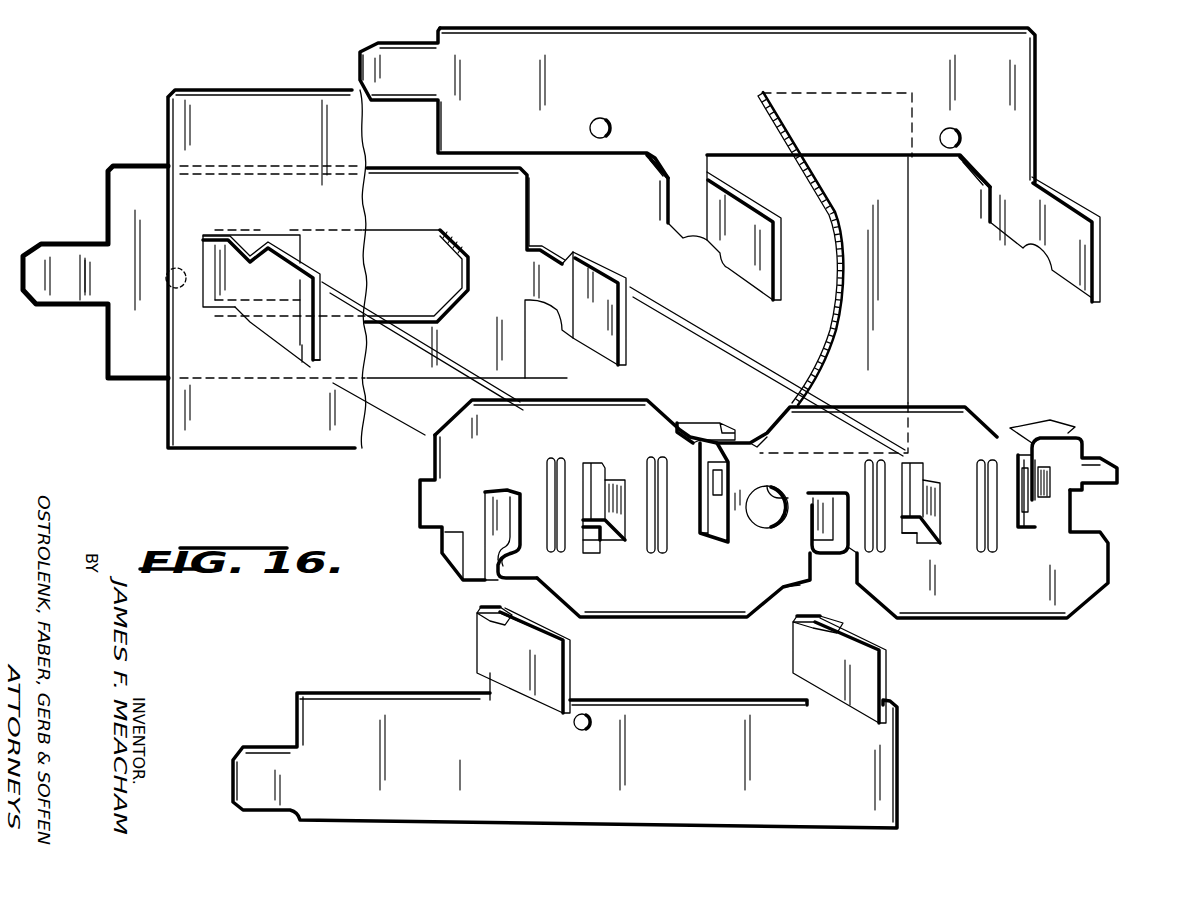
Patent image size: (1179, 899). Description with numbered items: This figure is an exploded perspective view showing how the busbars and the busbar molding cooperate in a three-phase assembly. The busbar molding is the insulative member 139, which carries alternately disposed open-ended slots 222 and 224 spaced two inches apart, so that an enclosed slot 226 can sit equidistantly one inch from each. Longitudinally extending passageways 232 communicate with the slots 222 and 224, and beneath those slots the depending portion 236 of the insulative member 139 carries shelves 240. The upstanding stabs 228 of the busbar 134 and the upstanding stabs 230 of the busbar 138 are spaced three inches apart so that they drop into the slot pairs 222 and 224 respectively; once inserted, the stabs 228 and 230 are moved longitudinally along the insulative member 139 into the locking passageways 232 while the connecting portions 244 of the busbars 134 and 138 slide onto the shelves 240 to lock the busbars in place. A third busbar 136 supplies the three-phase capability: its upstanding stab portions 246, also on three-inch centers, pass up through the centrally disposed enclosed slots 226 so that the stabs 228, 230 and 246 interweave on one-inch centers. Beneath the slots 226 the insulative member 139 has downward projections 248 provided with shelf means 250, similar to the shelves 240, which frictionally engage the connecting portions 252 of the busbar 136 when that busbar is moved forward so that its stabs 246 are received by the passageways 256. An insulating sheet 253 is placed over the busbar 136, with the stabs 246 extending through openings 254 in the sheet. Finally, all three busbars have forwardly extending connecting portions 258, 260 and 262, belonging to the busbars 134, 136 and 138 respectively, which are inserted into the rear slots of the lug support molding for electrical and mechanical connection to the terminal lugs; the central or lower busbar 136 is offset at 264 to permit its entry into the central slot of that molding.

The busbar 134 is at (1037, 98).
The third busbar 136 is at (128, 377).
The busbar 138 is at (898, 770).
The insulative member 139 is at (1080, 613).
The open-ended slot 222 is at (707, 443).
The open-ended slot 224 is at (483, 583).
The enclosed slot 226 is at (607, 541).
The upstanding stab 228 is at (772, 257).
The upstanding stab 230 is at (573, 673).
The passageway 232 is at (720, 468).
The depending portion 236 is at (693, 420).
The shelf 240 is at (498, 513).
The connecting portion 244 is at (668, 207).
The upstanding stab portion 246 is at (277, 338).
The downward projection 248 is at (591, 473).
The shelf means 250 is at (625, 525).
The connecting portion 252 is at (215, 279).
The insulating sheet 253 is at (860, 88).
The opening 254 is at (277, 237).
The passageway 256 is at (612, 477).
The forwardly extending connecting portion 258 is at (377, 68).
The forwardly extending connecting portion 260 is at (65, 310).
The forwardly extending connecting portion 262 is at (230, 763).
The offset 264 is at (908, 336).